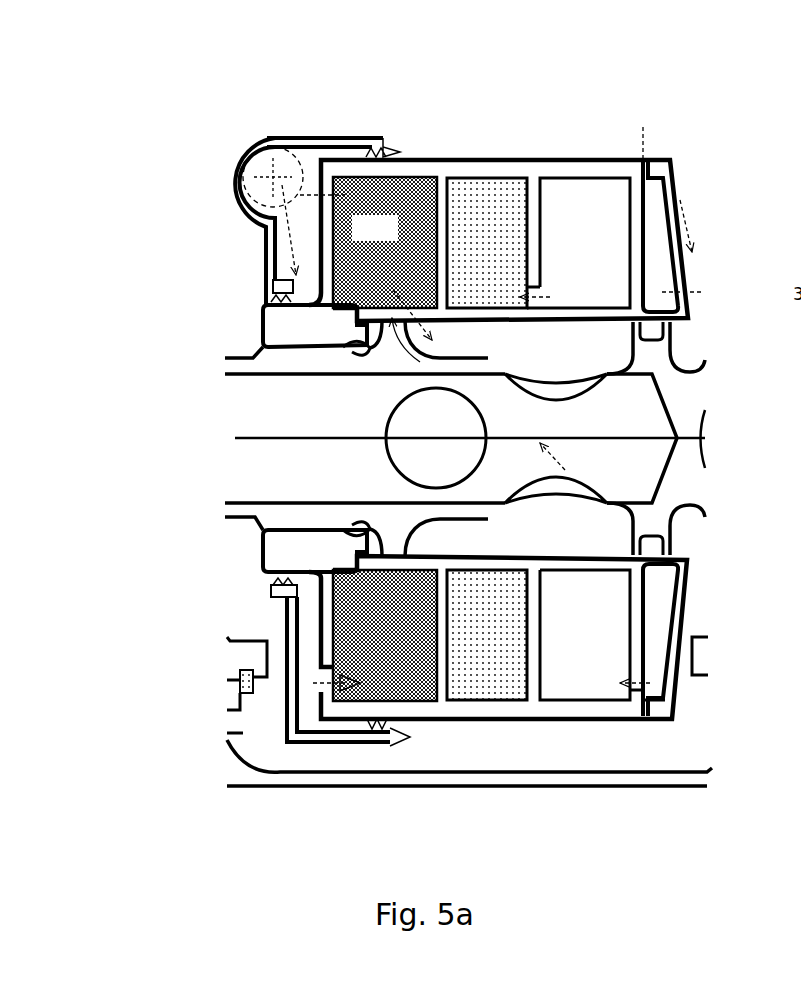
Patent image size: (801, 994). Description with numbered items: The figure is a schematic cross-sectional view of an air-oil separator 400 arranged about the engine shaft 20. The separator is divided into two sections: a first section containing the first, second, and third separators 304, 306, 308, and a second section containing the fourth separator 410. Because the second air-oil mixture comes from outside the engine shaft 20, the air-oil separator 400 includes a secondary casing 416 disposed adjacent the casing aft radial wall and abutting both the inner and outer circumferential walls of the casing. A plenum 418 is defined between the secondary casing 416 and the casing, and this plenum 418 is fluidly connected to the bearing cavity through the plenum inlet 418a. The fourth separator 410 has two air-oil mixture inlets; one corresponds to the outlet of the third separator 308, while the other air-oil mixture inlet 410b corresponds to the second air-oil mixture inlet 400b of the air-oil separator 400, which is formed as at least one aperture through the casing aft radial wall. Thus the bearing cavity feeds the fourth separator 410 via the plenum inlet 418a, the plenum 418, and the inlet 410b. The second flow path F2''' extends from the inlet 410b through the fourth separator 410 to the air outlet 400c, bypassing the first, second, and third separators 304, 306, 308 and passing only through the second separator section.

The air-oil separator 400 is at (772, 88).
The first separator 304 is at (655, 218).
The second separator 306 is at (600, 236).
The third separator 308 is at (492, 243).
The fourth separator 410 is at (368, 258).
The secondary casing 416 is at (320, 140).
The plenum inlet 418a is at (265, 167).
The second flow path F2''' is at (236, 325).
The air outlet 400c is at (470, 362).
The engine shaft 20 is at (286, 372).
The second air-oil mixture inlet 400b is at (314, 681).
The air-oil mixture inlet 410b is at (381, 707).
The plenum 418 is at (308, 614).